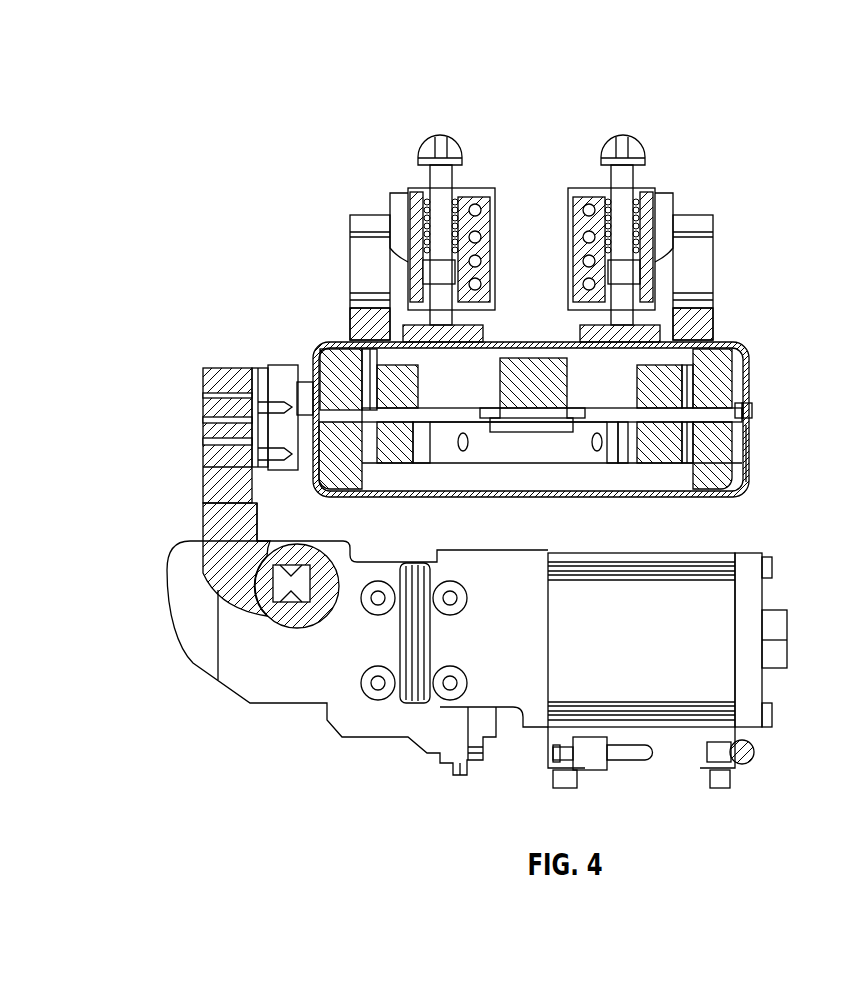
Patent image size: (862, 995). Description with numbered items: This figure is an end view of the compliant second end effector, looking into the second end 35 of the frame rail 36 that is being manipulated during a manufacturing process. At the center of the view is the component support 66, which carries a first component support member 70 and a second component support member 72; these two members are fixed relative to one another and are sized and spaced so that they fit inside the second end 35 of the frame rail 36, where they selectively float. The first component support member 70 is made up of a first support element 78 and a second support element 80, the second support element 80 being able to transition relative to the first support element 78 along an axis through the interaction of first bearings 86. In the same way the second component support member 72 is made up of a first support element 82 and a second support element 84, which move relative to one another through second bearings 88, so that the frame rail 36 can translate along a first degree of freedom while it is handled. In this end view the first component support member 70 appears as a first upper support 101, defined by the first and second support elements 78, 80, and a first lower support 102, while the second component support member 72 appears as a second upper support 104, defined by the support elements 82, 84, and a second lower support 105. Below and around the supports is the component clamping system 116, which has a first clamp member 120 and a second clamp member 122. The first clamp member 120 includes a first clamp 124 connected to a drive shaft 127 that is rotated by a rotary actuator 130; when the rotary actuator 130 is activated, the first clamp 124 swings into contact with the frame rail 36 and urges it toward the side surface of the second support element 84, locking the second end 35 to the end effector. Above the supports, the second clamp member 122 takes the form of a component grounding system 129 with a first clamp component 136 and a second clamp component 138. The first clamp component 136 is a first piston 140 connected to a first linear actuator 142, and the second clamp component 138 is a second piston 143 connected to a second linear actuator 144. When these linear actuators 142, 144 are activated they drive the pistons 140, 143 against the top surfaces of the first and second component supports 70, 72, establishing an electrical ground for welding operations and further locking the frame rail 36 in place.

The second end 35 is at (732, 340).
The frame rail 36 is at (757, 463).
The component support 66 is at (593, 477).
The first component support member 70 is at (635, 370).
The second component support member 72 is at (420, 372).
The first support element 78 is at (657, 383).
The second support element 80 is at (714, 392).
The first support element 82 is at (393, 390).
The second support element 84 is at (300, 380).
The first bearings 86 is at (750, 468).
The second bearings 88 is at (347, 365).
The first upper support 101 is at (713, 378).
The first lower support 102 is at (725, 440).
The second upper support 104 is at (355, 382).
The second lower support 105 is at (330, 457).
The component clamping system 116 is at (327, 639).
The first clamp member 120 is at (202, 463).
The second clamp member 122 is at (528, 213).
The first clamp 124 is at (215, 382).
The drive shaft 127 is at (287, 588).
The component grounding system 129 is at (373, 213).
The rotary actuator 130 is at (712, 667).
The first clamp component 136 is at (613, 150).
The second clamp component 138 is at (432, 148).
The first piston 140 is at (623, 180).
The first linear actuator 142 is at (652, 227).
The second piston 143 is at (443, 202).
The second linear actuator 144 is at (477, 198).